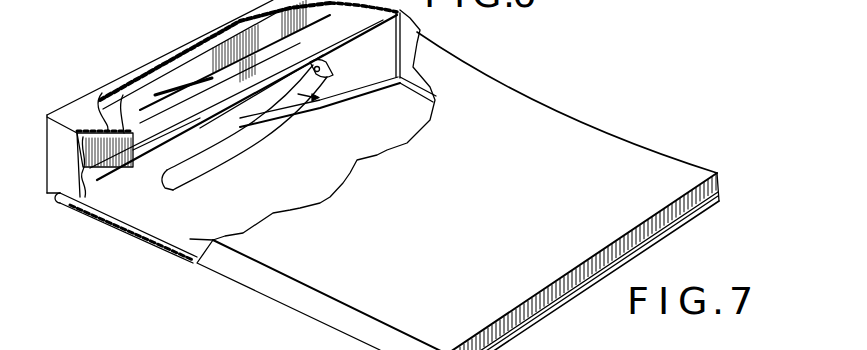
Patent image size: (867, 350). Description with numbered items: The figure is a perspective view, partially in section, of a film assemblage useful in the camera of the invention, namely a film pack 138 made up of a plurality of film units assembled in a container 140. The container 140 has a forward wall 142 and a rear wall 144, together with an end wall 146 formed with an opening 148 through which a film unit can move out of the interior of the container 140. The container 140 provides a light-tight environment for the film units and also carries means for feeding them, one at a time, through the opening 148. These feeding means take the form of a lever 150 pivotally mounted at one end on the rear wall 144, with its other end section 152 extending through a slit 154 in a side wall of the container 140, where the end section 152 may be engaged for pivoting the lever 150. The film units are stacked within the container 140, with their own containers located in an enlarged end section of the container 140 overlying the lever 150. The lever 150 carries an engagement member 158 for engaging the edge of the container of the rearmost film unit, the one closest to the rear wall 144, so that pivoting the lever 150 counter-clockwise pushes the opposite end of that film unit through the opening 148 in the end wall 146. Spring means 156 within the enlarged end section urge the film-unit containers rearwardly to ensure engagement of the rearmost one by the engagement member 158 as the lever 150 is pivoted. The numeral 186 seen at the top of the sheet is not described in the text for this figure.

In FIG. 7, the film pack 138 is at (623, 120).
In FIG. 7, the container 140 is at (487, 118).
In FIG. 7, the forward wall 142 is at (452, 228).
In FIG. 7, the rear wall 144 is at (292, 178).
In FIG. 7, the end wall 146 is at (573, 268).
In FIG. 7, the opening 148 is at (684, 216).
In FIG. 7, the lever 150 is at (241, 98).
In FIG. 7, the end section 152 is at (58, 203).
In FIG. 7, the slit 154 is at (84, 210).
In FIG. 7, the spring means 156 is at (146, 97).
In FIG. 7, the engagement member 158 is at (102, 95).
In FIG. 6, the element of FIG. 6 186 is at (793, 6).